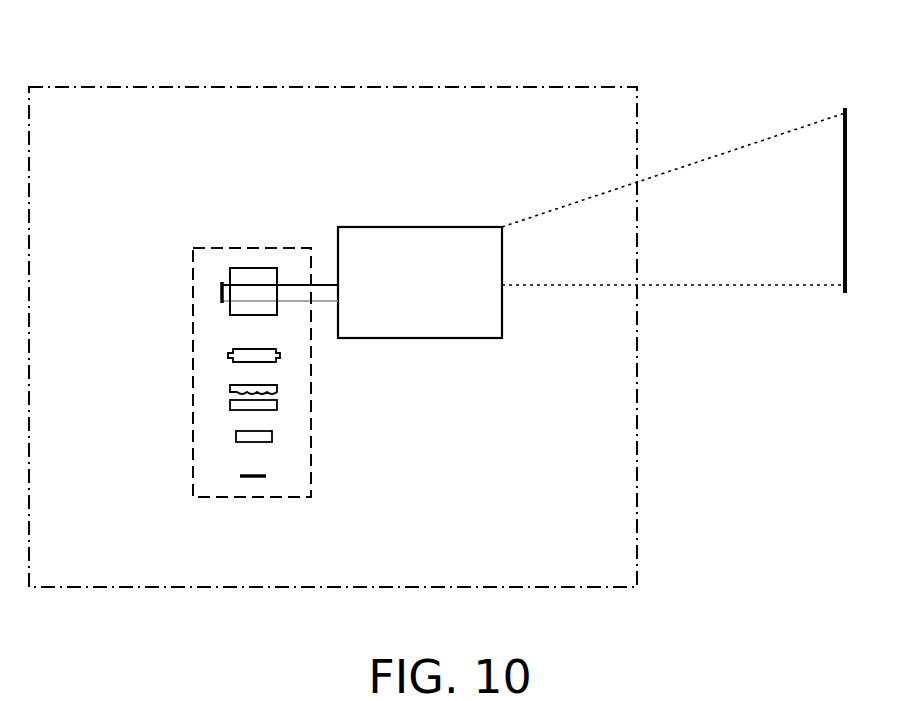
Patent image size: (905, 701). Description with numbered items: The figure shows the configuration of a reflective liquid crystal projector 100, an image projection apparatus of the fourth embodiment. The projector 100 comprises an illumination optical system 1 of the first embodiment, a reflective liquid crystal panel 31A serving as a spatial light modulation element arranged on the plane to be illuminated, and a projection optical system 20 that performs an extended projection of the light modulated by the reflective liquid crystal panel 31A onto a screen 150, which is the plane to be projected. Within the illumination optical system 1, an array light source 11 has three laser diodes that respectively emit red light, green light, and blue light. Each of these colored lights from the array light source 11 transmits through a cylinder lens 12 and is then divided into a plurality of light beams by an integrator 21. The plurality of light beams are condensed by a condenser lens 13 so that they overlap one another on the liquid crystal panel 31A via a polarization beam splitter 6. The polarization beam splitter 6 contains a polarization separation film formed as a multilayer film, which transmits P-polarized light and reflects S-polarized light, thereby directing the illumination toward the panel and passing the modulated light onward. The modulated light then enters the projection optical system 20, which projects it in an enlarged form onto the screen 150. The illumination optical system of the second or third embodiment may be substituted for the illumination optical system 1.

The reflective liquid crystal projector 100 is at (267, 87).
The screen 150 is at (843, 102).
The projection optical system 20 is at (385, 235).
The polarization beam splitter 6 is at (250, 280).
The reflective liquid crystal panel 31A is at (222, 290).
The illumination optical system 1 is at (193, 453).
The condenser lens 13 is at (225, 353).
The integrator 21 is at (280, 395).
The cylinder lens 12 is at (272, 440).
The array light source 11 is at (255, 483).